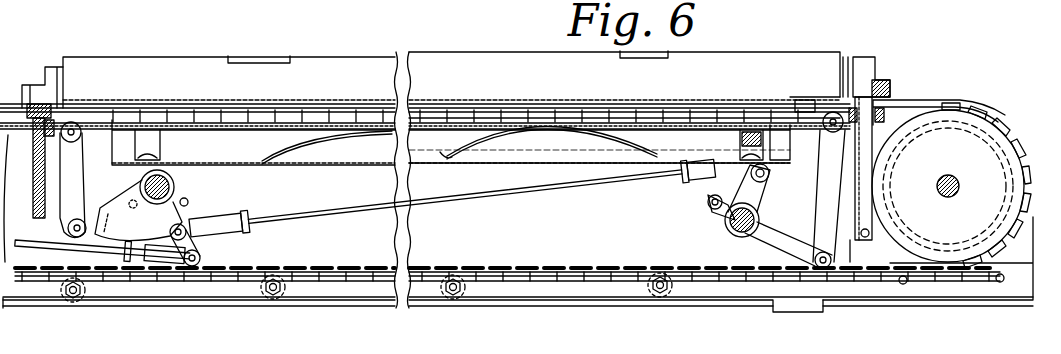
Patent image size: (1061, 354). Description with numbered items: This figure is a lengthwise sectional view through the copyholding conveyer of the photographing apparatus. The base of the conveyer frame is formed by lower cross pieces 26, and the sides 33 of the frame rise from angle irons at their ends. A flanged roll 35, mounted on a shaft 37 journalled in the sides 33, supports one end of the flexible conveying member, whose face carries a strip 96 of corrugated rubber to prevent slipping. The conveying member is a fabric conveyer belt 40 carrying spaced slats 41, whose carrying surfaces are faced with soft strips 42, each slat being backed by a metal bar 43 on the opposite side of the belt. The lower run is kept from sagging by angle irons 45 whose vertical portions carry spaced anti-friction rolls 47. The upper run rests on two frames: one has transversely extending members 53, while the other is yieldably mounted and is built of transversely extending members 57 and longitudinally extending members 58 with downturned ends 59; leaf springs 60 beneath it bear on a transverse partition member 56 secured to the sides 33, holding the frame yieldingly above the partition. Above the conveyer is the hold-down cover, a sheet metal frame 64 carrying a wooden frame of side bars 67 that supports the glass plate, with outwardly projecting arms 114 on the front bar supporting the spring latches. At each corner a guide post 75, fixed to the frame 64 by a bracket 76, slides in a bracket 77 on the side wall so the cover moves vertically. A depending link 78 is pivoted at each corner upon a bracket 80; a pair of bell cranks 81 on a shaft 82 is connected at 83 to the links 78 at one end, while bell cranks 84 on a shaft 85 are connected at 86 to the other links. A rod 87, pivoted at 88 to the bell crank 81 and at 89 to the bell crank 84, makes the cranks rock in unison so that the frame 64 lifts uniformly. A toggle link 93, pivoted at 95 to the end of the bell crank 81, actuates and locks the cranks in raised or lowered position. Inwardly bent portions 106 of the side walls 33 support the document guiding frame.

The lower cross pieces 26 is at (782, 306).
The sides of the conveyer frame 33 is at (790, 7).
The flanged roll 35 is at (928, 208).
The shaft 37 is at (954, 178).
The conveyer belt 40 is at (438, 273).
The slats 41 is at (292, 116).
The strips of soft fabric 42 is at (987, 116).
The bar 43 is at (598, 258).
The angle irons 45 is at (343, 291).
The anti-friction rolls 47 is at (298, 268).
The transversely extending members 53 is at (856, 240).
The partition member 56 is at (500, 164).
The transversely extending members 57 is at (175, 138).
The longitudinally extending members 58 is at (672, 108).
The downturned ends 59 is at (105, 118).
The leaf springs 60 is at (305, 133).
The sheet metal frame 64 is at (758, 98).
The side bars 67 is at (343, 61).
The guide post 75 is at (31, 166).
The bracket 76 is at (31, 85).
The brackets 77 is at (898, 126).
The depending link 78 is at (78, 175).
The bracket 80 is at (820, 101).
The bell cranks 81 is at (97, 213).
The shaft 82 is at (172, 181).
The connection 83 is at (67, 228).
The bell cranks 84 is at (758, 243).
The shaft 85 is at (714, 212).
The pivotal connection 86 is at (806, 248).
The rod 87 is at (524, 203).
The pivotal connection 88 is at (194, 222).
The pivotal connection 89 is at (770, 188).
The toggle link 93 is at (110, 254).
The pivotal connection 95 is at (200, 256).
The strip of corrugated rubber 96 is at (900, 150).
The inwardly bent portions 106 is at (915, 98).
The outwardly projecting arms 114 is at (252, 56).